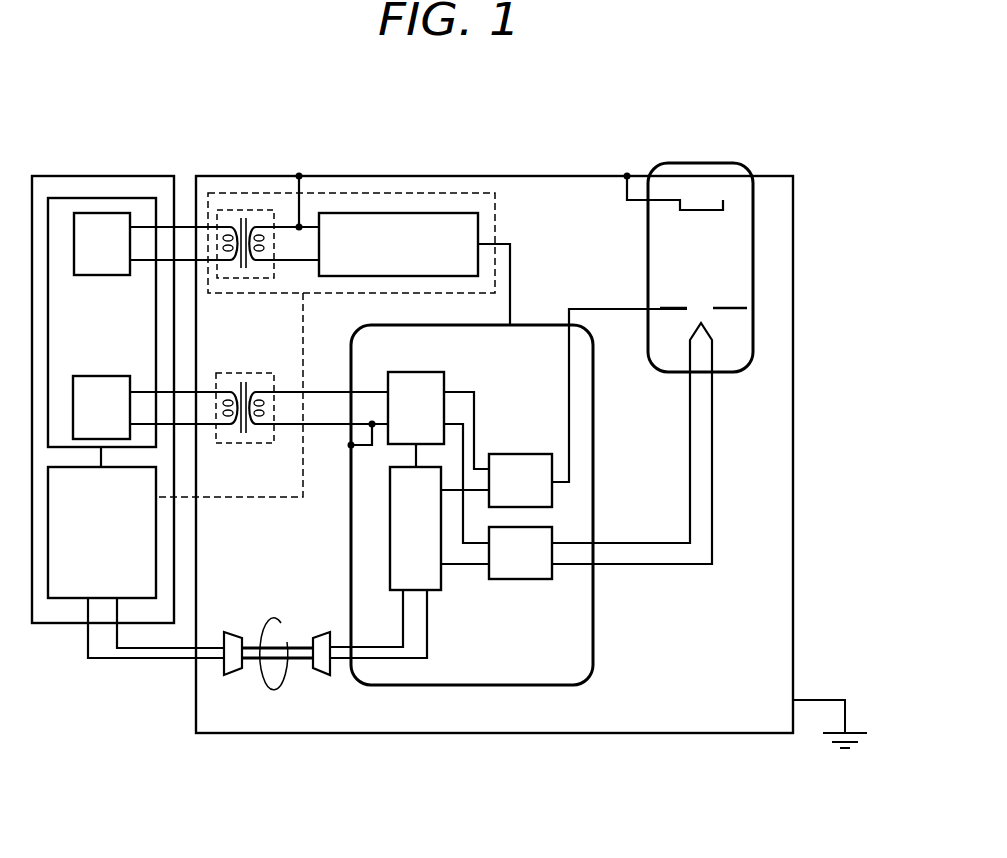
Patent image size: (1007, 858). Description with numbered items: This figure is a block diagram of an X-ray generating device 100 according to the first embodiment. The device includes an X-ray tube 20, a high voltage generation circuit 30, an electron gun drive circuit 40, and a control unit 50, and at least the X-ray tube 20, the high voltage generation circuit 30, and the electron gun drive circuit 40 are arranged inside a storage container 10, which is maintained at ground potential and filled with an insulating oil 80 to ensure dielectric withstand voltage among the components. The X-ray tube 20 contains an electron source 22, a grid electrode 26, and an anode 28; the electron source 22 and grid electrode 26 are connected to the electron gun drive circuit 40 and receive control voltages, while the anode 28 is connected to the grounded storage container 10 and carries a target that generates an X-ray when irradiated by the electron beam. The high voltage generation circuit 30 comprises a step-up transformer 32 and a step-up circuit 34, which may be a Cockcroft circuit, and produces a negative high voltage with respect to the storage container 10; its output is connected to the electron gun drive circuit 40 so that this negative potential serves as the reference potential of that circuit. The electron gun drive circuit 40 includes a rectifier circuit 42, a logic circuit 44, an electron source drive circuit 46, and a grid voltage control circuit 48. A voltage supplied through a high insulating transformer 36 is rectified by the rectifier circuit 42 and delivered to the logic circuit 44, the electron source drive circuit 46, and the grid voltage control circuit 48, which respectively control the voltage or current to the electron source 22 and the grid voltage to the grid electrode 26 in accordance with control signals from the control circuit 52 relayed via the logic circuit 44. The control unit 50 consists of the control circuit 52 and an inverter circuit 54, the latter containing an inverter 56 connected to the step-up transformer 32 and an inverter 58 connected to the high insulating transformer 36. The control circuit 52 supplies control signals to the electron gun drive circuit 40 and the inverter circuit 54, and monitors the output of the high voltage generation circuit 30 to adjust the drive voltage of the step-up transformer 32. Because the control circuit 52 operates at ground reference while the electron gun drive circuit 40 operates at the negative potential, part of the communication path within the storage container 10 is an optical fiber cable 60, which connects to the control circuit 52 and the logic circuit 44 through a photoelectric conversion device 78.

The X-ray generating device 100 is at (574, 125).
The storage container 10 is at (707, 733).
The insulating oil 80 is at (740, 692).
The X-ray tube 20 is at (753, 255).
The electron source 22 is at (712, 335).
The grid electrode 26 is at (668, 305).
The anode 28 is at (723, 200).
The high voltage generation circuit 30 is at (446, 193).
The step-up transformer 32 is at (251, 210).
The step-up circuit 34 is at (378, 213).
The high insulating transformer 36 is at (251, 373).
The electron gun drive circuit 40 is at (593, 618).
The rectifier circuit 42 is at (444, 375).
The logic circuit 44 is at (390, 545).
The electron source drive circuit 46 is at (522, 579).
The grid voltage control circuit 48 is at (530, 454).
The control unit 50 is at (70, 176).
The control circuit 52 is at (58, 598).
The inverter circuit 54 is at (132, 198).
The inverter 56 is at (83, 280).
The inverter 58 is at (117, 376).
The optical fiber cable 60 is at (283, 690).
The photoelectric conversion device 78 is at (233, 632).